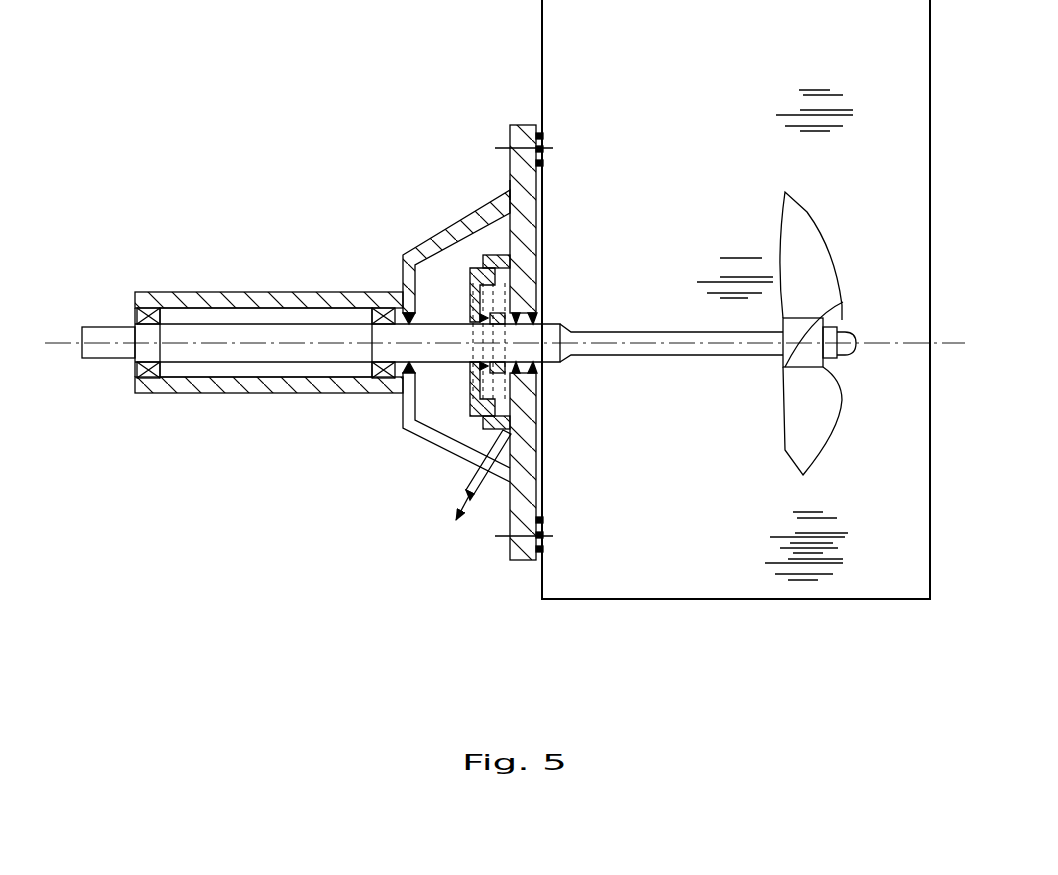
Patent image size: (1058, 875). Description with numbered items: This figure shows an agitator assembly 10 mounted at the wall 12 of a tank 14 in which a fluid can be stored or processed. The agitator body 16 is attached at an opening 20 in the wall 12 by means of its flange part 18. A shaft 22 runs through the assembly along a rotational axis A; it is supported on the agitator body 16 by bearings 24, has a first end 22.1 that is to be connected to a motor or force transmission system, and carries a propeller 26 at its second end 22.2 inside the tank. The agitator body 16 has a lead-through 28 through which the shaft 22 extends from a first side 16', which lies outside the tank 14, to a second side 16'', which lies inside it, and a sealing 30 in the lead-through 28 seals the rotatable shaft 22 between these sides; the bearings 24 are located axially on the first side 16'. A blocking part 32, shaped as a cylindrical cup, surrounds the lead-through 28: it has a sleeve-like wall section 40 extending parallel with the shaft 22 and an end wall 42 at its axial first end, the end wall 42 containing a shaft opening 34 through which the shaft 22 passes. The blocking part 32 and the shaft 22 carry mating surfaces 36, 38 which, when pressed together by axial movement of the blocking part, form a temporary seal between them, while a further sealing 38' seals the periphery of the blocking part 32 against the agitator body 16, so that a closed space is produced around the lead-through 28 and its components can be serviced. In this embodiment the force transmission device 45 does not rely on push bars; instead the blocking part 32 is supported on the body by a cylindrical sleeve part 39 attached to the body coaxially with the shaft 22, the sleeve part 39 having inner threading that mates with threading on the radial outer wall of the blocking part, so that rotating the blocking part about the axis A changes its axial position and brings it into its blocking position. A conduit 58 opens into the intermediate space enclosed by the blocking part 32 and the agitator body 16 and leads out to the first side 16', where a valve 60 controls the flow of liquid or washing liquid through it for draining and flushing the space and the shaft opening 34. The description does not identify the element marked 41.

The agitator assembly 10 is at (448, 152).
The wall 12 is at (543, 108).
The tank 14 is at (741, 244).
The agitator body 16 is at (575, 211).
The first side 16' is at (454, 163).
The second side 16'' is at (606, 178).
The flange part 18 is at (513, 160).
The opening 20 is at (546, 497).
The shaft 22 is at (210, 330).
The first end 22.1 is at (93, 333).
The second end 22.2 is at (774, 372).
The bearings 24 is at (148, 310).
The propeller 26 is at (818, 290).
The lead-through 28 is at (570, 372).
The sealing 30 is at (545, 318).
The blocking part 32 is at (452, 229).
The shaft opening 34 is at (470, 365).
The mating surface 36 is at (563, 370).
The mating surface 38 is at (546, 397).
The sealing 38' is at (534, 280).
The cylindrical sleeve part 39 is at (497, 258).
The wall section 40 is at (488, 266).
The support strut 41 is at (468, 452).
The end wall 42 is at (468, 302).
The force transmission device 45 is at (357, 280).
The conduit 58 is at (470, 482).
The valve 60 is at (487, 497).
The rotational axis A is at (871, 343).